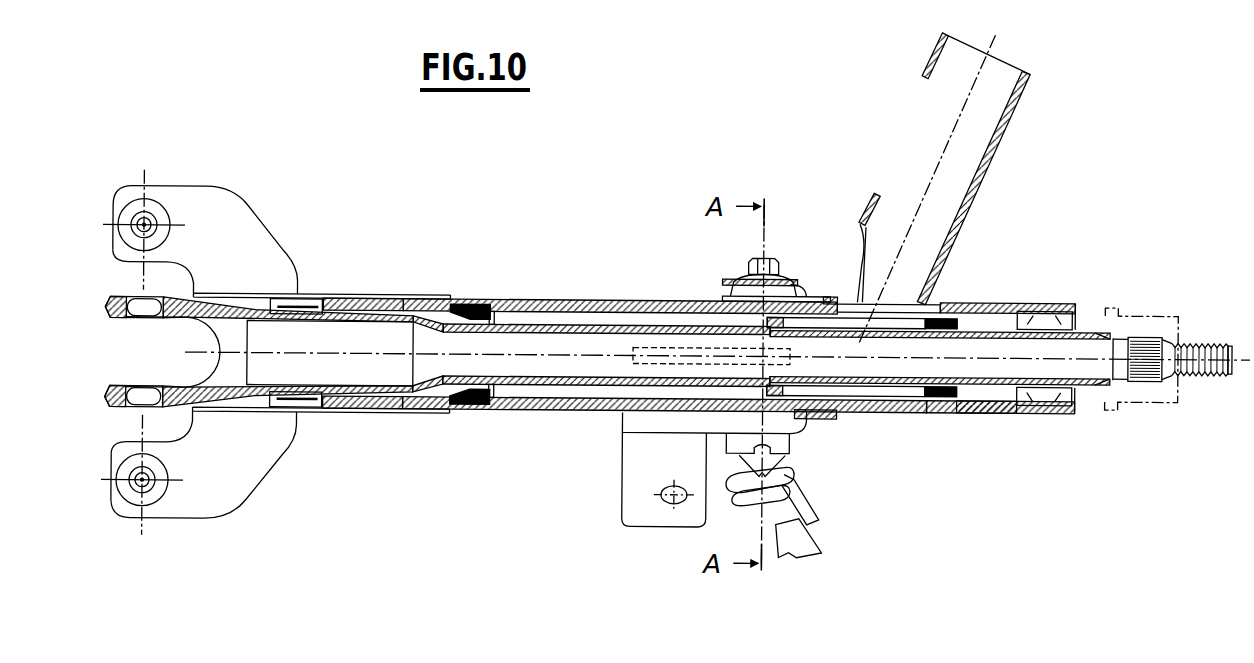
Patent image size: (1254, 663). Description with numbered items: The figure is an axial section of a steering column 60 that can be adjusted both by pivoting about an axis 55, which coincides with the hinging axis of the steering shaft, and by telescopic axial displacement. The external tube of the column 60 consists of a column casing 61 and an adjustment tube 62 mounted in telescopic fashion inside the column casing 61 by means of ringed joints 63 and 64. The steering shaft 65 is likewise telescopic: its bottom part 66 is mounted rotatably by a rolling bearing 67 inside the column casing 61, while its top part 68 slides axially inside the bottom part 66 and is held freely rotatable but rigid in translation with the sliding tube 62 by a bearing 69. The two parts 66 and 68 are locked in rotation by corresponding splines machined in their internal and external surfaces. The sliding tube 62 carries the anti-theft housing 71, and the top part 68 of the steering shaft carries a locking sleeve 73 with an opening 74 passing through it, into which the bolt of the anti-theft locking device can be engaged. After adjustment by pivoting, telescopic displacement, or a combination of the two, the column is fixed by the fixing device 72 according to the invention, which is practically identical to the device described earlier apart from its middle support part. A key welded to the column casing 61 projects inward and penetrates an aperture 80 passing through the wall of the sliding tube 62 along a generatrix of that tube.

The axis 55 is at (143, 519).
The steering column 60 is at (515, 294).
The column casing 61 is at (585, 297).
The adjustment tube 62 is at (998, 299).
The ringed joint 63 is at (828, 415).
The ringed joint 64 is at (462, 303).
The steering shaft 65 is at (489, 391).
The bottom part 66 is at (378, 408).
The rolling bearing 67 is at (302, 410).
The top part 68 is at (990, 396).
The bearing 69 is at (1062, 400).
The anti-theft housing 71 is at (1009, 113).
The fixing device 72 is at (621, 506).
The locking sleeve 73 is at (935, 313).
The opening 74 is at (898, 326).
The aperture 80 is at (686, 343).